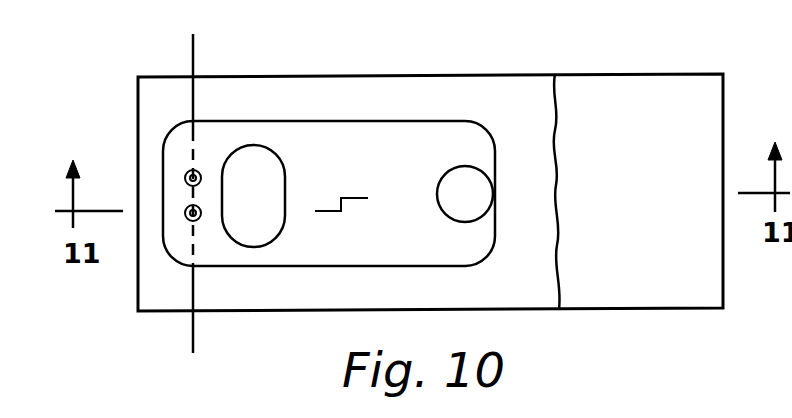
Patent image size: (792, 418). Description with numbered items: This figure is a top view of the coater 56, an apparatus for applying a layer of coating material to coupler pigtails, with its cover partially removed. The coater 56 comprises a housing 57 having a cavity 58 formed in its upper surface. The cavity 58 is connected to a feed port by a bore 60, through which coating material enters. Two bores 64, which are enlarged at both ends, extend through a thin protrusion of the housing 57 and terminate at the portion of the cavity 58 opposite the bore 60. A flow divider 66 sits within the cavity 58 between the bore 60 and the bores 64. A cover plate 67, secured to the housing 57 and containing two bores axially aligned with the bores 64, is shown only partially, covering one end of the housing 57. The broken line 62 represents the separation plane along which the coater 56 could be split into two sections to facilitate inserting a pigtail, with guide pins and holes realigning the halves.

The coater 56 is at (375, 76).
The housing 57 is at (483, 74).
The cavity 58 is at (388, 250).
The bore 60 is at (446, 184).
The broken line 62 is at (192, 48).
The bores 64 is at (201, 210).
The flow divider 66 is at (285, 172).
The cover plate 67 is at (652, 73).